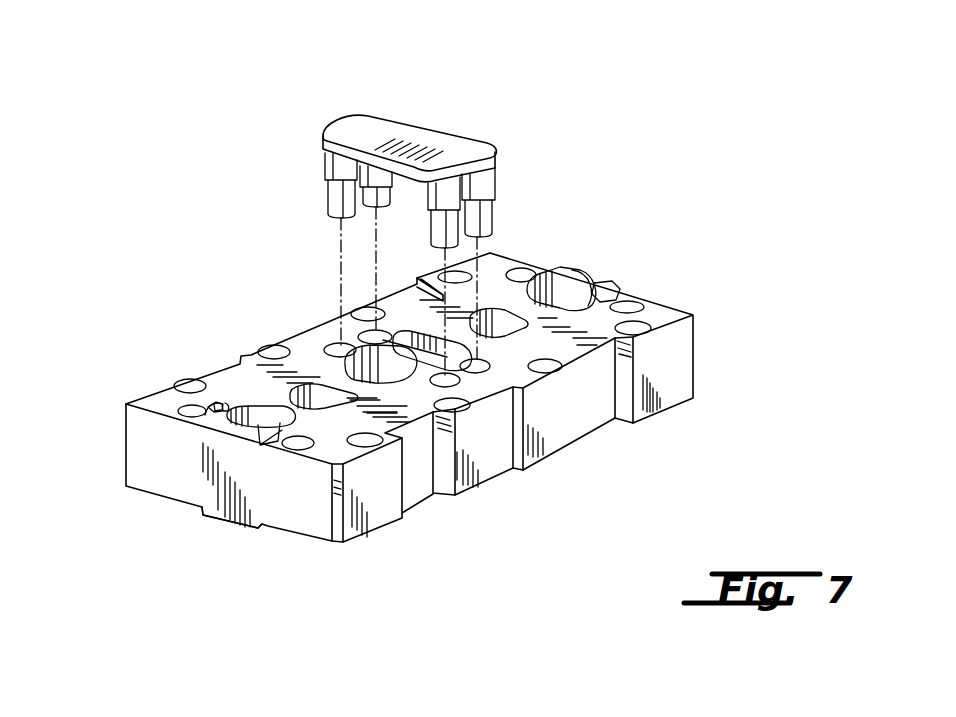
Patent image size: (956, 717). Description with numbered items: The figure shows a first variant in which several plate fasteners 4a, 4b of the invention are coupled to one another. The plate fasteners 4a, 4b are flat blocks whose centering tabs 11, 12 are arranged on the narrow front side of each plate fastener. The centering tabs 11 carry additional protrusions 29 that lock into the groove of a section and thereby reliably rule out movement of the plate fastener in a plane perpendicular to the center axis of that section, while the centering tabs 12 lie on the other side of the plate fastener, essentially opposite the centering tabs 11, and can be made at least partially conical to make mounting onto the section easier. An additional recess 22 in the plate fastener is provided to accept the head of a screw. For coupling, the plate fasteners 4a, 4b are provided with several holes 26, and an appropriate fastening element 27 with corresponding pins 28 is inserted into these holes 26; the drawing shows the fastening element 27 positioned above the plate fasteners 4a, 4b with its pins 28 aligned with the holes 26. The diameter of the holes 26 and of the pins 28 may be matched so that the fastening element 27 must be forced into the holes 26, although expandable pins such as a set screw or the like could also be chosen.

The plate fastener 4a is at (677, 375).
The plate fastener 4b is at (368, 497).
The centering tabs 11 is at (610, 274).
The centering tabs 12 is at (212, 527).
The recess 22 is at (225, 405).
The holes 26 is at (580, 270).
The fastening element 27 is at (382, 135).
The pins 28 is at (457, 233).
The protrusions 29 is at (257, 412).